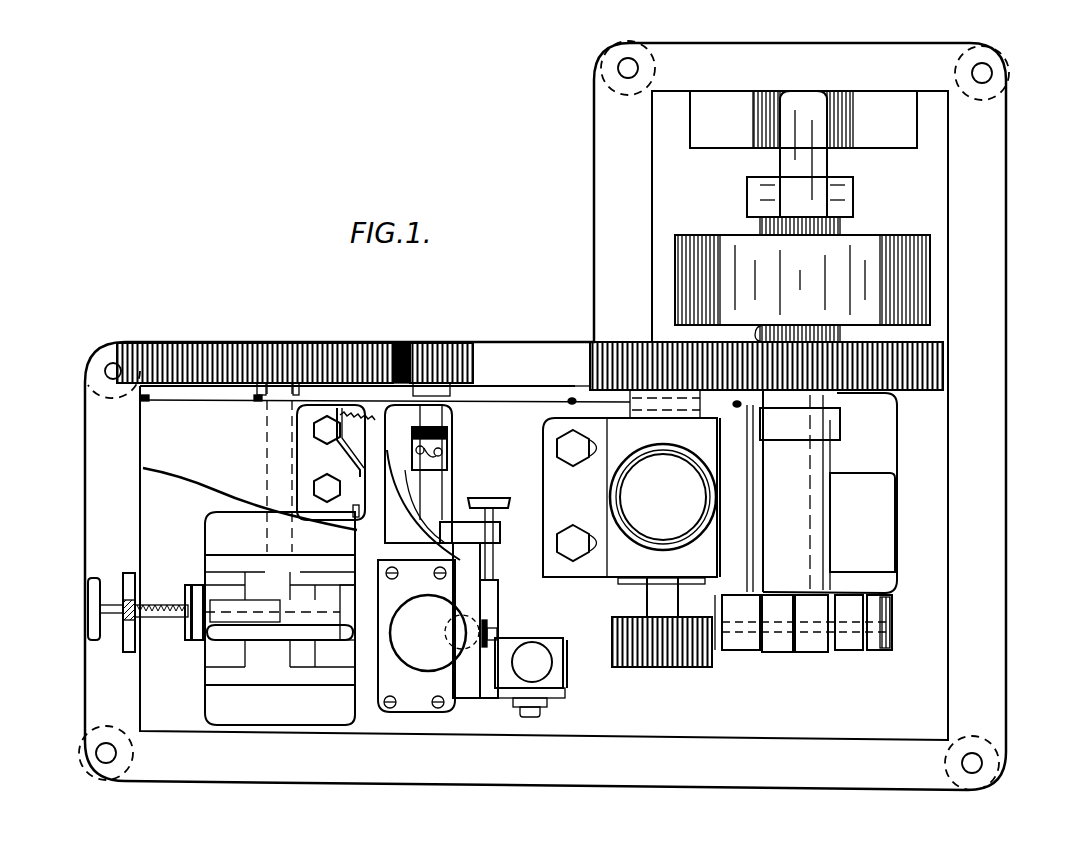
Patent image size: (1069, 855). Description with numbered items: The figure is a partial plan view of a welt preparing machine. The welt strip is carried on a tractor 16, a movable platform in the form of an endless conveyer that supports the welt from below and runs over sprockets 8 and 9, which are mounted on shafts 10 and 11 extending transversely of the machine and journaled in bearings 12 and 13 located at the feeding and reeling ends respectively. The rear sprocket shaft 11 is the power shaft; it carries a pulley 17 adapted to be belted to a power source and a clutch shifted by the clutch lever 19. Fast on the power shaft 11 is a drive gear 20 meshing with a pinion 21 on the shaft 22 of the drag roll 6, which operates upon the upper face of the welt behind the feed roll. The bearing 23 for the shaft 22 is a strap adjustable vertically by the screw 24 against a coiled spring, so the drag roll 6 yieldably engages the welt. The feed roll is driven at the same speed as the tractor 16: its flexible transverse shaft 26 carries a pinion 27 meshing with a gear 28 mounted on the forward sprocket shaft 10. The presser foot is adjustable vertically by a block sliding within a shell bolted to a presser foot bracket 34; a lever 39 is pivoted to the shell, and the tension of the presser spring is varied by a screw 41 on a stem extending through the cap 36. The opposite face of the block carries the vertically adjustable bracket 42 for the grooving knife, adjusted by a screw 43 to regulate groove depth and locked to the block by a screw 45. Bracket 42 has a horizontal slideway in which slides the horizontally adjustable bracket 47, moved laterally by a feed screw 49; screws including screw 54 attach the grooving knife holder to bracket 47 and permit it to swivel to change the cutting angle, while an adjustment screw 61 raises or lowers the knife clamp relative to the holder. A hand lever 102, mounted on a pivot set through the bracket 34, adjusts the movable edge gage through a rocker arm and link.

The drag roll 6 is at (687, 667).
The sprocket 8 is at (180, 592).
The sprocket 9 is at (845, 637).
The forward sprocket shaft 10 is at (282, 453).
The rear sprocket shaft 11 is at (755, 330).
The bearing 12 is at (213, 557).
The bearing 13 is at (877, 520).
The tractor 16 is at (873, 652).
The pulley 17 is at (868, 250).
The clutch lever 19 is at (828, 168).
The drive gear 20 is at (943, 370).
The pinion 21 is at (668, 355).
The drag roll shaft 22 is at (658, 592).
The bearing 23 is at (707, 582).
The screw 24 is at (631, 497).
The feed roll shaft 26 is at (430, 493).
The pinion 27 is at (440, 348).
The gear 28 is at (248, 354).
The presser foot bracket 34 is at (372, 448).
The cap 36 is at (412, 697).
The lever 39 is at (290, 633).
The screw 41 is at (434, 633).
The vertically adjustable bracket 42 is at (467, 695).
The screw 43 is at (484, 606).
The screw 45 is at (494, 631).
The horizontally adjustable bracket 47 is at (498, 703).
The feed screw 49 is at (520, 487).
The screw 54 is at (537, 712).
The adjustment screw 61 is at (538, 662).
The hand lever 102 is at (327, 420).